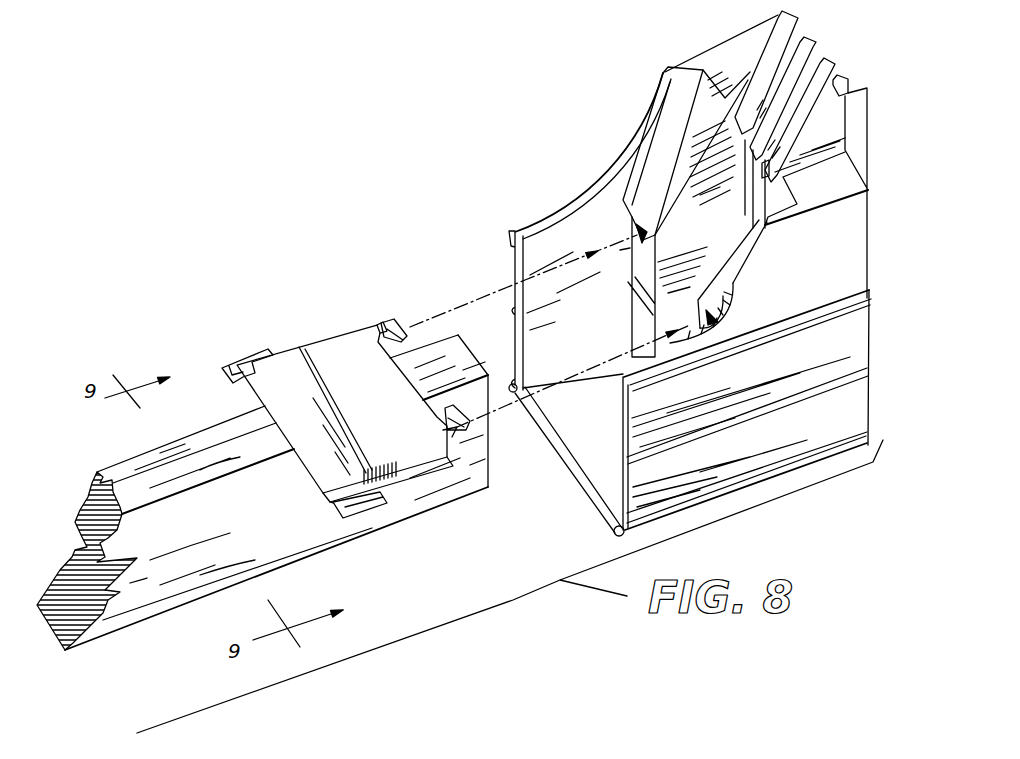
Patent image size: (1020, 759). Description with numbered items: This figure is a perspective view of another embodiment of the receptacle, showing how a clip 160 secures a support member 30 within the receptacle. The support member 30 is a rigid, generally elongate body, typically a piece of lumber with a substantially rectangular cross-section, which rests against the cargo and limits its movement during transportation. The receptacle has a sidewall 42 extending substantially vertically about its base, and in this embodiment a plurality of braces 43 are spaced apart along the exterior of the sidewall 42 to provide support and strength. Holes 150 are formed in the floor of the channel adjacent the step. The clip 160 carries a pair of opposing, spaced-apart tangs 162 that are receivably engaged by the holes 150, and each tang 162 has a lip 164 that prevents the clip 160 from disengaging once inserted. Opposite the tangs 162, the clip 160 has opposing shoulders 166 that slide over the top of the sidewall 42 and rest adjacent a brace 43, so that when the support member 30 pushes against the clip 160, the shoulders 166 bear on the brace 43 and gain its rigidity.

The support member 30 is at (168, 580).
The clip 160 is at (334, 347).
The tangs 162 is at (372, 326).
The lip 164 is at (389, 318).
The shoulders 166 is at (254, 352).
The holes 150 is at (632, 238).
The sidewall 42 is at (852, 409).
The brace 43 is at (848, 377).